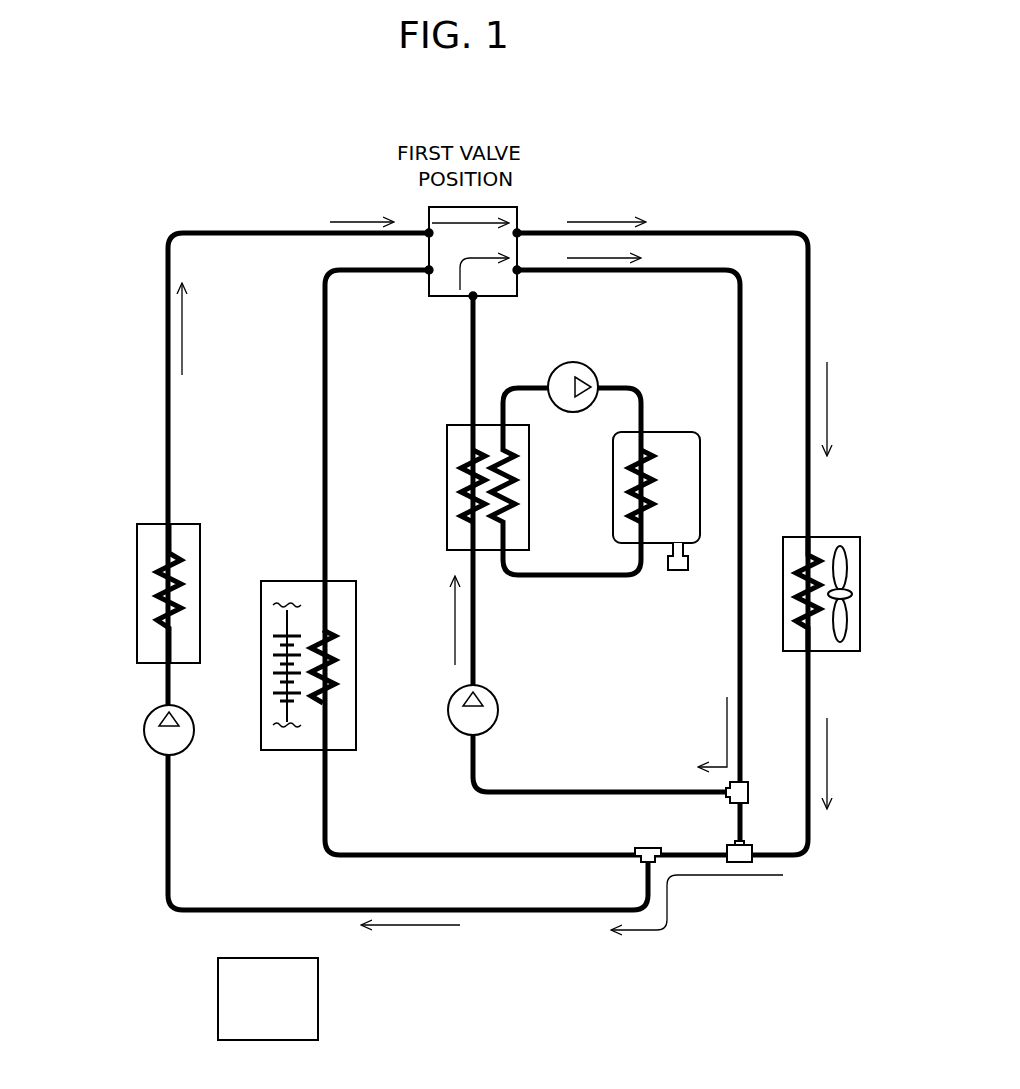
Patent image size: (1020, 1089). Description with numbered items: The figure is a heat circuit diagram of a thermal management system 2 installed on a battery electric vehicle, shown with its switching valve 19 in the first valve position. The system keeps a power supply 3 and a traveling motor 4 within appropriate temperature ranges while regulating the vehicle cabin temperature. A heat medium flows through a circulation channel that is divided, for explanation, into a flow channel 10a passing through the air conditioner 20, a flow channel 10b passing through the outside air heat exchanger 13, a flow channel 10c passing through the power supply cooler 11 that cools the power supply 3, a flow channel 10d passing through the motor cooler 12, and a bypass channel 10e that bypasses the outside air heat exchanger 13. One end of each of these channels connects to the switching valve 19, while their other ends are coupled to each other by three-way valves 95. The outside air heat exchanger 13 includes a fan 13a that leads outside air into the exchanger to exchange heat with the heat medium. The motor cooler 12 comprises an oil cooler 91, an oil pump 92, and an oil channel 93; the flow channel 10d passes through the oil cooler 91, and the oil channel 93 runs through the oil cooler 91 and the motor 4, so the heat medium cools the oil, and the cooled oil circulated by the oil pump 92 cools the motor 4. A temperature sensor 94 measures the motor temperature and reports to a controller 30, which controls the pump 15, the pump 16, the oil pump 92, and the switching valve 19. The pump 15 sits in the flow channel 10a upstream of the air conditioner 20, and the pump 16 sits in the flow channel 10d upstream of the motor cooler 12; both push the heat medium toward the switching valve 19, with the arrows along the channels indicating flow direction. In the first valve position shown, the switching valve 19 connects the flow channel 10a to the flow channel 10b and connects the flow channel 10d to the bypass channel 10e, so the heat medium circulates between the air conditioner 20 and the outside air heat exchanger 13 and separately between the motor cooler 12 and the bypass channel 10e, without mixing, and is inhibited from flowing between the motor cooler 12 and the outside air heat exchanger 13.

The thermal management system 2 is at (108, 160).
The flow channel 10a is at (234, 230).
The flow channel 10b is at (722, 230).
The flow channel 10c is at (320, 362).
The flow channel 10d is at (476, 357).
The bypass channel 10e is at (737, 320).
The switching valve 19 is at (432, 299).
The air conditioner 20 is at (150, 523).
The pump 15 is at (185, 750).
The power supply 3 is at (258, 670).
The power supply cooler 11 is at (340, 663).
The oil cooler 91 is at (530, 505).
The motor cooler 12 is at (528, 590).
The oil pump 92 is at (573, 413).
The oil channel 93 is at (600, 578).
The motor 4 is at (667, 432).
The temperature sensor 94 is at (676, 573).
The pump 16 is at (498, 705).
The outside air heat exchanger 13 is at (820, 652).
The fan 13a is at (838, 542).
The three-way valve 95 is at (752, 850).
The controller 30 is at (320, 1010).